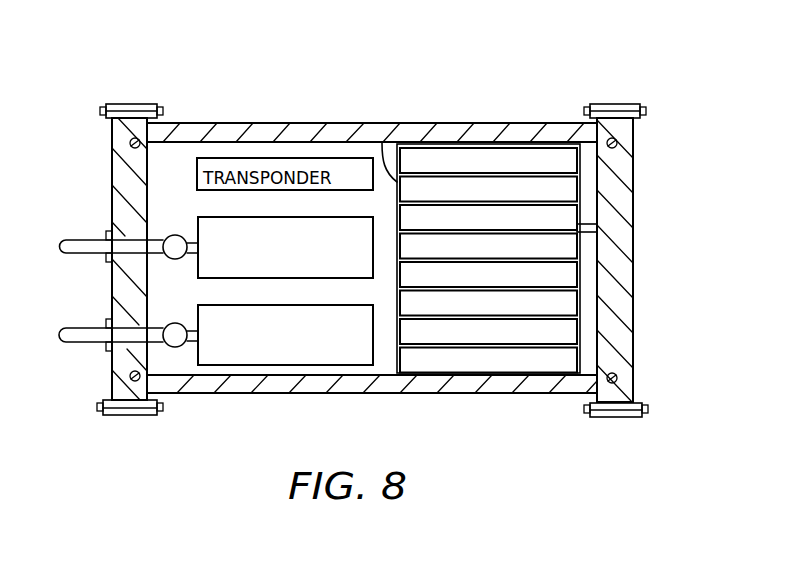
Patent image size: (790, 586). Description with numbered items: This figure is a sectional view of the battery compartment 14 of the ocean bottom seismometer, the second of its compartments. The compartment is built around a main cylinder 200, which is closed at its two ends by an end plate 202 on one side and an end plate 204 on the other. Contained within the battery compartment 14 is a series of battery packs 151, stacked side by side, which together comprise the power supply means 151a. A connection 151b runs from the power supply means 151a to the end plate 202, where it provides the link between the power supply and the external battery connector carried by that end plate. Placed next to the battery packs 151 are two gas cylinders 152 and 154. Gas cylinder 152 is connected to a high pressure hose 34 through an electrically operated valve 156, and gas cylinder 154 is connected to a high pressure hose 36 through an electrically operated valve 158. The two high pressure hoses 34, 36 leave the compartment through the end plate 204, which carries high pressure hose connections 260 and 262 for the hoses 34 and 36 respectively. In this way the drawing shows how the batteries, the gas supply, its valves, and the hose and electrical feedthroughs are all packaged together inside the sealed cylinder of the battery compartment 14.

The battery compartment 14 is at (374, 224).
The high pressure hose 34 is at (88, 245).
The high pressure hose 36 is at (86, 335).
The battery packs 151 is at (517, 248).
The power supply means 151a is at (382, 143).
The connection 151b is at (590, 221).
The gas cylinder 152 is at (285, 247).
The gas cylinder 154 is at (285, 335).
The electrically operated valve 156 is at (178, 244).
The electrically operated valve 158 is at (178, 332).
The main cylinder 200 is at (266, 80).
The end plate 202 is at (620, 316).
The end plate 204 is at (130, 162).
The high pressure hose connection 260 is at (108, 257).
The high pressure hose connection 262 is at (108, 350).